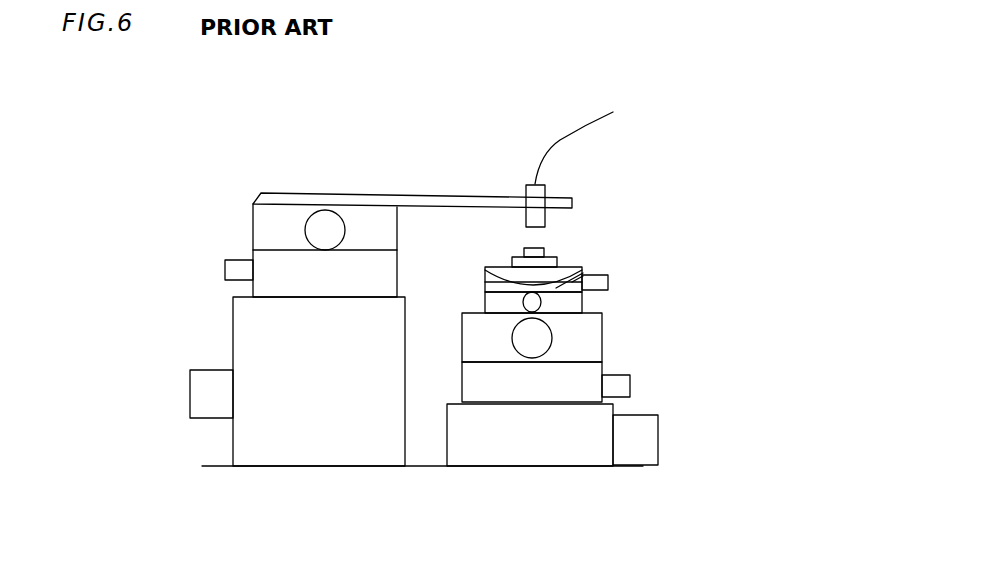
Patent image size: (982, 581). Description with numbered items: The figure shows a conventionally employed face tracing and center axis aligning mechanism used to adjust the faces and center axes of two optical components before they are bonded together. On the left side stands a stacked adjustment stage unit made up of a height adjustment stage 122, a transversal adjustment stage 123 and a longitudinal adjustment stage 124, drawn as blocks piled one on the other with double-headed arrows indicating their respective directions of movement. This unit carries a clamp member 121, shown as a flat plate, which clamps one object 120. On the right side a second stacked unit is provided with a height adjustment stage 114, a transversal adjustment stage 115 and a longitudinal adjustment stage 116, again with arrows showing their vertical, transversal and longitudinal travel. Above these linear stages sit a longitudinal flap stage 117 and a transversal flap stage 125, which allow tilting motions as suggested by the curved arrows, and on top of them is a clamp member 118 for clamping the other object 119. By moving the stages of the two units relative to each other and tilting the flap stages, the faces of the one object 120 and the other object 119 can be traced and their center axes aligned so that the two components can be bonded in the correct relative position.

The height adjustment stage 114 is at (616, 437).
The transversal adjustment stage 115 is at (631, 405).
The longitudinal adjustment stage 116 is at (603, 314).
The longitudinal flap stage 117 is at (608, 290).
The clamp member 118 is at (583, 273).
The other object 119 is at (545, 248).
The one object 120 is at (532, 184).
The clamp member 121 is at (485, 197).
The height adjustment stage 122 is at (243, 350).
The transversal adjustment stage 123 is at (253, 259).
The longitudinal adjustment stage 124 is at (253, 206).
The transversal flap stage 125 is at (587, 275).